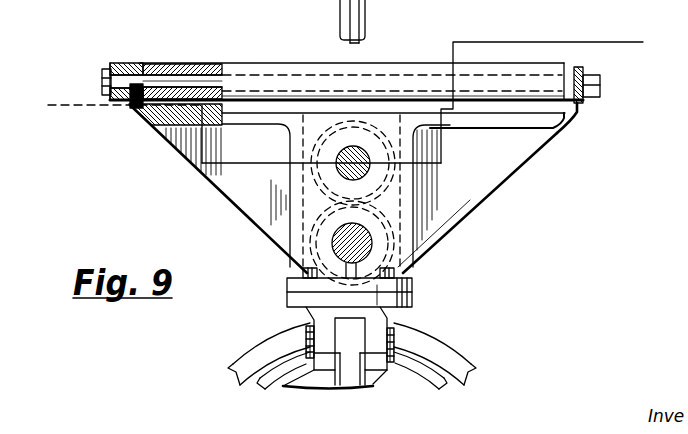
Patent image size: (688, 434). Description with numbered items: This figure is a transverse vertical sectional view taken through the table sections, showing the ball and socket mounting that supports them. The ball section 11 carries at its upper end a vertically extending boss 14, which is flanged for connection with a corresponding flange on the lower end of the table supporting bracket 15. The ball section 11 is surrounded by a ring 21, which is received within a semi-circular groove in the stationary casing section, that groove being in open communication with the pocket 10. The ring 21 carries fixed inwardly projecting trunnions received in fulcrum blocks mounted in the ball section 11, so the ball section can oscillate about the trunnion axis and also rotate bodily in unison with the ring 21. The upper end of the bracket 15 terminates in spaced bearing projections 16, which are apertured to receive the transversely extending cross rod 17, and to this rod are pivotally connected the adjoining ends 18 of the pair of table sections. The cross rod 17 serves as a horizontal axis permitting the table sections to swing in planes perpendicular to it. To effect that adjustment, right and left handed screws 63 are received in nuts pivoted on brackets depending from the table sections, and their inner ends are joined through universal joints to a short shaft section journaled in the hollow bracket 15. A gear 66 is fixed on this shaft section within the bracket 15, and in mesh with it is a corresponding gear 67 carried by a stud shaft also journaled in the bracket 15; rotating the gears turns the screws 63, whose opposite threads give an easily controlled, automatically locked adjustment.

The pocket 10 is at (48, 96).
The ball section 11 is at (387, 381).
The boss 14 is at (390, 318).
The table supporting bracket 15 is at (402, 275).
The bearing projections 16 is at (143, 83).
The cross rod 17 is at (185, 78).
The adjoining ends 18 is at (117, 62).
The ring 21 is at (413, 373).
The right and left handed screws 63 is at (365, 28).
The gear 66 is at (290, 245).
The gear 67 is at (300, 148).